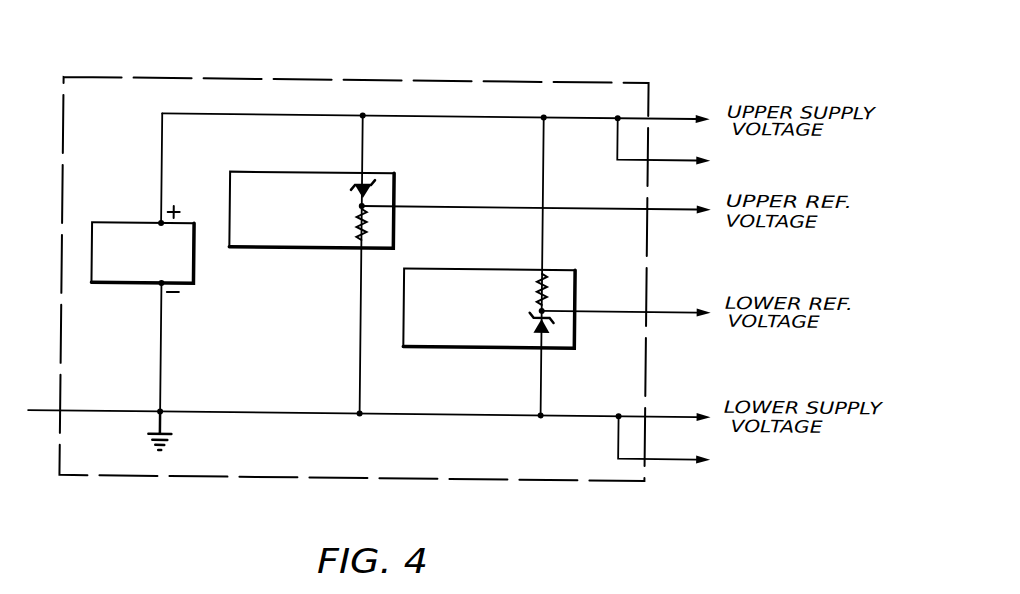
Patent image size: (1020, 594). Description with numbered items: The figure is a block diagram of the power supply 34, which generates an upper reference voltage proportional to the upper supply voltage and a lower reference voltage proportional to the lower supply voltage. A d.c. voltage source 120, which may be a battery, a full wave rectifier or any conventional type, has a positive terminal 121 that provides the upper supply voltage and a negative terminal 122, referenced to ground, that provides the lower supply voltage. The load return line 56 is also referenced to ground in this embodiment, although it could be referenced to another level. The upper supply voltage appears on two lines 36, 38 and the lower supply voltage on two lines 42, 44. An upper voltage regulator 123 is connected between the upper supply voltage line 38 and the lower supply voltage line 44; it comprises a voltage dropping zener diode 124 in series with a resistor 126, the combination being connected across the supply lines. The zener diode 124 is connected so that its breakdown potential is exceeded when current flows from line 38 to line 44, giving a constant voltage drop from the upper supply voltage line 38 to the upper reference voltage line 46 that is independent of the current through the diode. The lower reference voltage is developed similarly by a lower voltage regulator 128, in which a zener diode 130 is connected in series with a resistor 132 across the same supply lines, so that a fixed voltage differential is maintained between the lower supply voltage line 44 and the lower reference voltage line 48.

The power supply 34 is at (367, 80).
The first upper supply voltage line 36 is at (668, 157).
The second upper supply voltage line 38 is at (668, 114).
The first lower supply voltage line 42 is at (668, 455).
The second lower supply voltage line 44 is at (668, 411).
The upper reference voltage line 46 is at (668, 206).
The lower reference voltage line 48 is at (668, 309).
The load return line 56 is at (35, 408).
The d.c. voltage source 120 is at (128, 289).
The positive terminal 121 is at (160, 224).
The negative terminal 122 is at (159, 292).
The upper voltage regulator 123 is at (386, 172).
The zener diode 124 is at (356, 185).
The resistor 126 is at (355, 232).
The lower voltage regulator 128 is at (428, 264).
The zener diode 130 is at (535, 323).
The resistor 132 is at (538, 283).